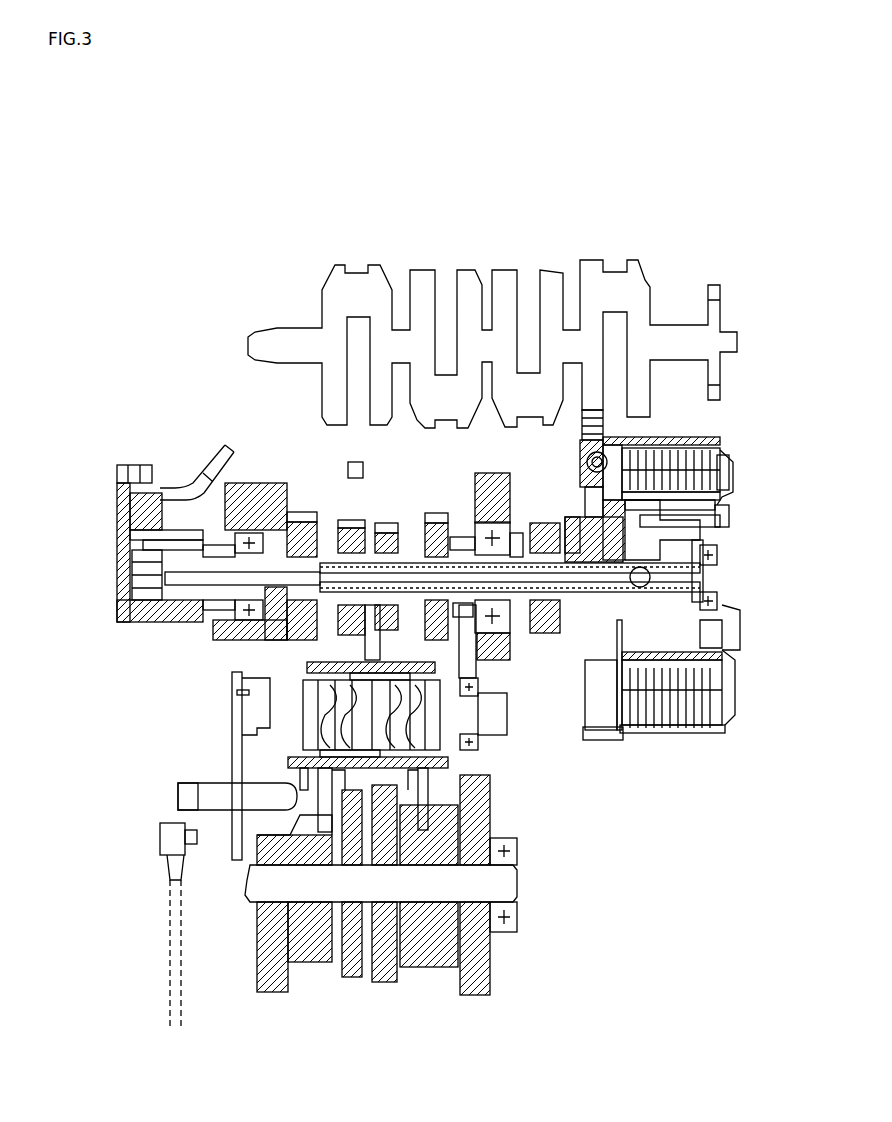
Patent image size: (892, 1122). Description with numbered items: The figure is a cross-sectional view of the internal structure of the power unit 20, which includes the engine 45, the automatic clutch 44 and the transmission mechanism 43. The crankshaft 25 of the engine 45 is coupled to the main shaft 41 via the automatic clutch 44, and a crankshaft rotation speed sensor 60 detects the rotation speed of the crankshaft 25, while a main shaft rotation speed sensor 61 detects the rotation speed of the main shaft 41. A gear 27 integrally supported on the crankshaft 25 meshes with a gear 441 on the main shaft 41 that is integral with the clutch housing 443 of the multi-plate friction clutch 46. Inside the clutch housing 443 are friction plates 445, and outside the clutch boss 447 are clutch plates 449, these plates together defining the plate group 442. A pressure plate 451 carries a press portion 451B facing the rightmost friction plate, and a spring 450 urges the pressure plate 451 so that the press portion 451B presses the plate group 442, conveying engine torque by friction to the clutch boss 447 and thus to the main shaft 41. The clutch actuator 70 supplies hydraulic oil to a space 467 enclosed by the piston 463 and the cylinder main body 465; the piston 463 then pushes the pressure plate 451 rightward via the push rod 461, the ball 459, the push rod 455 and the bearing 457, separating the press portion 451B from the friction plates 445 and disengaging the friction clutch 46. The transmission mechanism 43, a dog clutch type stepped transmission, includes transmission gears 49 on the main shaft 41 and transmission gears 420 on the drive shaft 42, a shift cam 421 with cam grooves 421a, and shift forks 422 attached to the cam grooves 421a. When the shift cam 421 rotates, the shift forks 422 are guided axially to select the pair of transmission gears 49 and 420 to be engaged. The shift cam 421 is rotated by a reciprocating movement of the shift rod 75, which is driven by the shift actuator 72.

The power unit 20 is at (692, 145).
The crankshaft 25 is at (548, 265).
The gear 27 is at (605, 418).
The main shaft 41 is at (462, 540).
The drive shaft 42 is at (515, 878).
The transmission mechanism 43 is at (585, 858).
The automatic clutch 44 is at (808, 522).
The engine 45 is at (636, 245).
The friction clutch 46 is at (743, 454).
The transmission gear 49 is at (406, 520).
The crankshaft rotation speed sensor 60 is at (716, 297).
The main shaft rotation speed sensor 61 is at (357, 518).
The clutch actuator 70 is at (226, 443).
The shift actuator 72 is at (185, 1030).
The shift rod 75 is at (166, 860).
The transmission gear 420 is at (495, 812).
The shift cam 421 is at (306, 673).
The cam groove 421a is at (418, 698).
The shift fork 422 is at (240, 640).
The gear 441 is at (584, 430).
The plate group 442 is at (668, 733).
The clutch housing 443 is at (668, 437).
The friction plate 445 is at (730, 450).
The clutch boss 447 is at (737, 661).
The clutch plate 449 is at (697, 440).
The spring 450 is at (732, 502).
The pressure plate 451 is at (733, 471).
The press portion 451B is at (728, 722).
The push rod 455 is at (712, 574).
The bearing 457 is at (737, 639).
The ball 459 is at (720, 599).
The push rod 461 is at (339, 575).
The piston 463 is at (229, 530).
The cylinder main body 465 is at (134, 623).
The space 467 is at (118, 568).